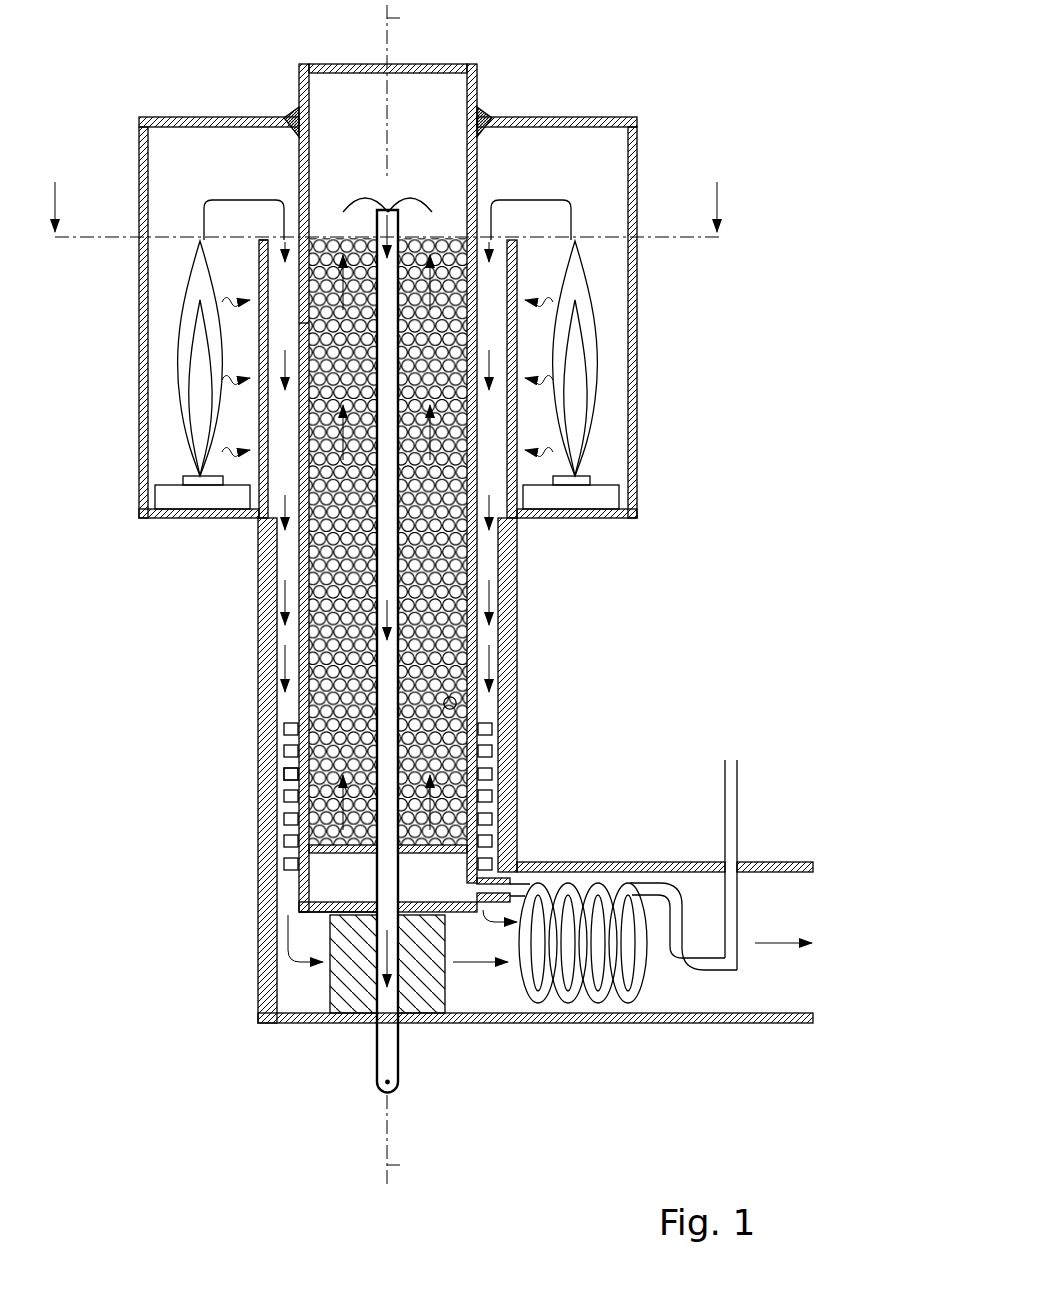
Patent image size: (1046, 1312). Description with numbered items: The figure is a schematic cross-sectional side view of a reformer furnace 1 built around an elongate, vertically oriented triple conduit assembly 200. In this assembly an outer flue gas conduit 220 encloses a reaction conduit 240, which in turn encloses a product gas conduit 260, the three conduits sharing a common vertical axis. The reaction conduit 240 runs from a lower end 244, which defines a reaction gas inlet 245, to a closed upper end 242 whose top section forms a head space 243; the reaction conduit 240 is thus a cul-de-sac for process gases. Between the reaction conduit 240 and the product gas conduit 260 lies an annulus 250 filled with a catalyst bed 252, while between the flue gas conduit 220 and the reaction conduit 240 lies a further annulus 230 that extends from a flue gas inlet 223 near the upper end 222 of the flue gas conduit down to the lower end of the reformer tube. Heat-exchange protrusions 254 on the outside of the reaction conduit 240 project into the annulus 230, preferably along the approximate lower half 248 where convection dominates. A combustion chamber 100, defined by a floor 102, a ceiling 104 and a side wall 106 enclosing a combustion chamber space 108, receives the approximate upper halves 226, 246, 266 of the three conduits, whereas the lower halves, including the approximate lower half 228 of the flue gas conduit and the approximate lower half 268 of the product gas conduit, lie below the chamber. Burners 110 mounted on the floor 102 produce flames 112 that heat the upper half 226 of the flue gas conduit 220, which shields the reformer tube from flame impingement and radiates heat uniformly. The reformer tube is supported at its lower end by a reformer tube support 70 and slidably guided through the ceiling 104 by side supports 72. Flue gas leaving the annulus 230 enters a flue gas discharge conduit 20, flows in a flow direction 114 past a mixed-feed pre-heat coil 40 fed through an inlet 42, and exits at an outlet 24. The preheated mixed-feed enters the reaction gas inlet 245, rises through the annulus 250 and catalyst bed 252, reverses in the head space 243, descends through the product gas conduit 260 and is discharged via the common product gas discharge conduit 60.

The reformer furnace 1 is at (650, 100).
The flue gas discharge conduit 20 is at (587, 1023).
The outlet of flue gas discharge conduit 24 is at (795, 978).
The reaction gas pre-heat coil 40 is at (586, 890).
The inlet of reaction gas pre-heat coil 42 is at (737, 822).
The product gas discharge conduit 60 is at (380, 1082).
The reformer tube support 70 is at (353, 962).
The reformer tube side support 72 is at (290, 115).
The combustion chamber 100 is at (440, 289).
The lower wall of combustion chamber 102 is at (594, 518).
The upper wall of combustion chamber 104 is at (592, 122).
The side wall of combustion chamber 106 is at (632, 268).
The combustion chamber space 108 is at (572, 173).
The burner 110 is at (170, 497).
The burner flame 112 is at (200, 375).
The flue gas flow direction 114 is at (530, 200).
The triple conduit assembly 200 is at (422, 807).
The flue gas conduit 220 is at (268, 592).
The upper end of flue gas conduit 222 is at (263, 244).
The flue gas inlet 223 is at (275, 242).
The approximate upper half of flue gas conduit 226 is at (263, 428).
The approximate lower half of flue gas conduit 228 is at (267, 703).
The annulus between flue gas conduit and reaction conduit 230 is at (288, 560).
The reaction conduit 240 is at (254, 458).
The closed upper end of reaction conduit 242 is at (343, 68).
The head space 243 is at (325, 113).
The lower end of reaction conduit 244 is at (330, 902).
The reaction gas inlet 245 is at (497, 887).
The approximate upper half of reaction conduit 246 is at (303, 323).
The approximate lower half of reaction conduit 248 is at (303, 740).
The annulus between reaction conduit and product gas conduit 250 is at (313, 658).
The steam reforming catalyst 252 is at (450, 703).
The heat-exchange-surface providing protrusion 254 is at (292, 772).
The product gas conduit 260 is at (389, 658).
The approximate upper half of product gas conduit 266 is at (387, 402).
The approximate lower half of product gas conduit 268 is at (389, 740).